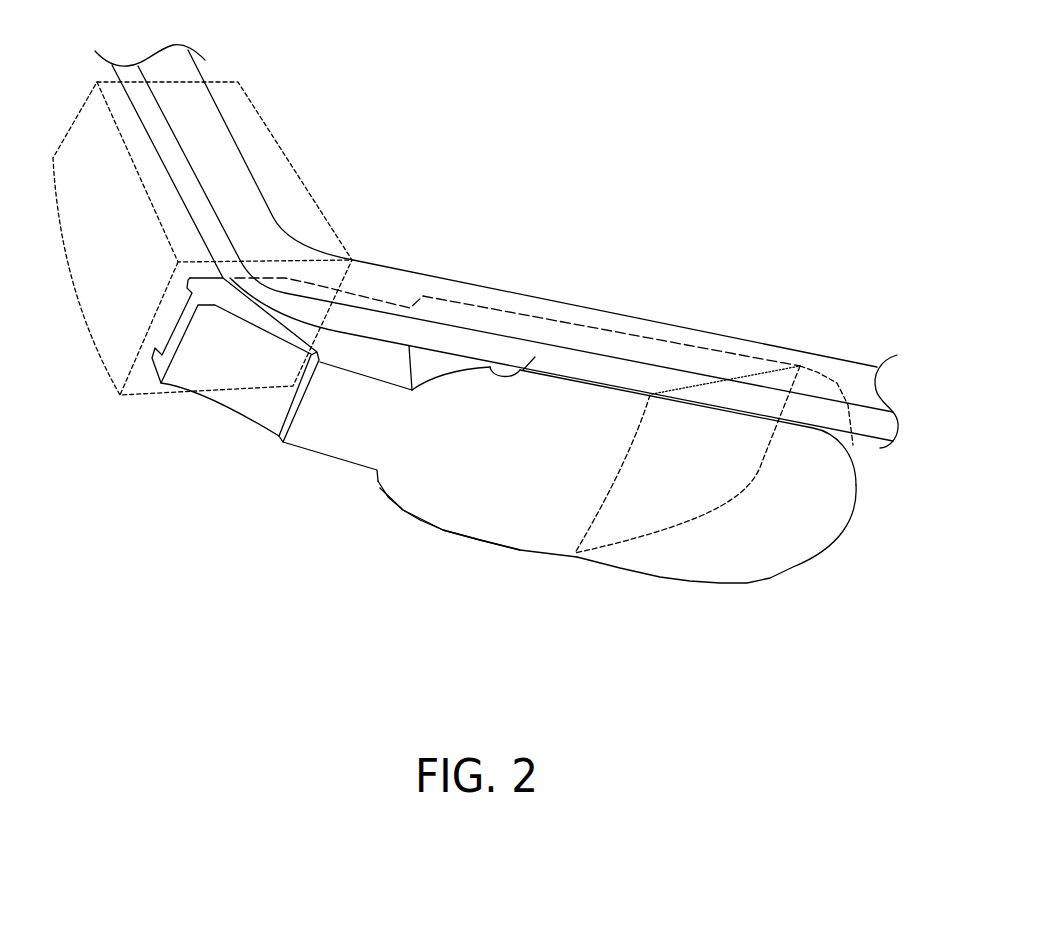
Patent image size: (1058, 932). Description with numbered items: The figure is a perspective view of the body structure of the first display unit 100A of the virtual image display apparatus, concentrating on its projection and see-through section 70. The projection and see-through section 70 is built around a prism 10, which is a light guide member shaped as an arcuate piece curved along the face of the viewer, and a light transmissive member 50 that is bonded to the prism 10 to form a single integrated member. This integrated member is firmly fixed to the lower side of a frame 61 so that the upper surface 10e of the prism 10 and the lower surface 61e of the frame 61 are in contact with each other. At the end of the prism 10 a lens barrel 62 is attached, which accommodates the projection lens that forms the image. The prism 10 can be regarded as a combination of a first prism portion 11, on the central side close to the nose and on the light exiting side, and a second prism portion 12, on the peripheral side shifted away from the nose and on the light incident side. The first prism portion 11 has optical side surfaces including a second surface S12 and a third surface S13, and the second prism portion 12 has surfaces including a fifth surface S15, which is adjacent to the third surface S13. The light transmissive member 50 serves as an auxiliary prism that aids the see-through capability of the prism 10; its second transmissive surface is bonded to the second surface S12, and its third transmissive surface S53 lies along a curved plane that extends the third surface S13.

The first display unit 100A is at (726, 104).
The lens barrel 62 is at (285, 163).
The frame 61 is at (667, 332).
The lower surface of the frame 61e is at (493, 365).
The second prism portion 12 is at (258, 398).
The fifth surface S15 is at (225, 380).
The prism 10 is at (523, 548).
The upper surface of the prism 10e is at (727, 358).
The first prism portion 11 is at (482, 507).
The light transmissive member 50 is at (797, 565).
The second surface S12 is at (673, 493).
The third surface S13 is at (542, 400).
The third transmissive surface S53 is at (727, 555).
The projection and see-through section 70 is at (320, 536).